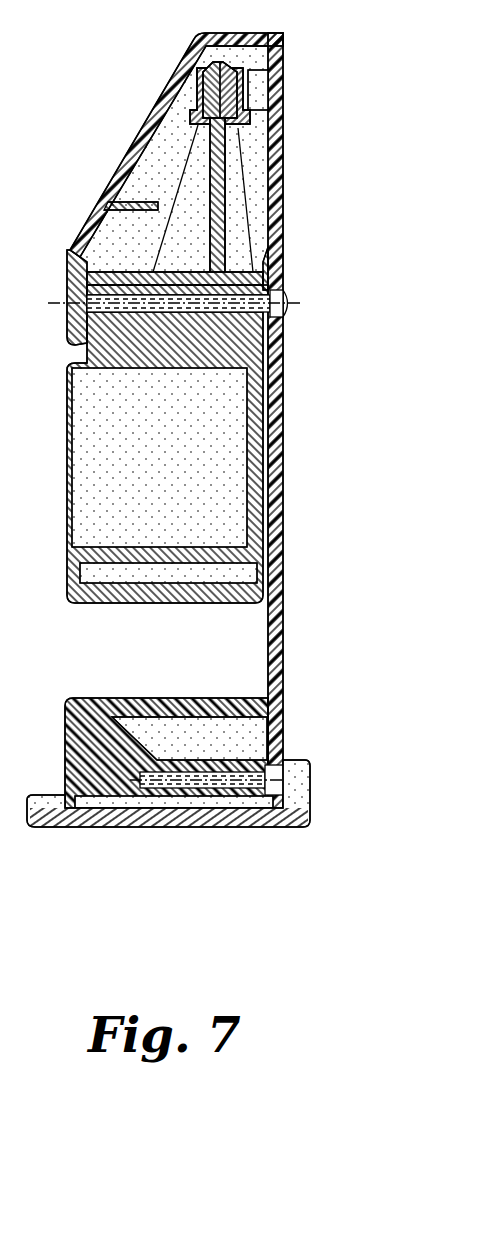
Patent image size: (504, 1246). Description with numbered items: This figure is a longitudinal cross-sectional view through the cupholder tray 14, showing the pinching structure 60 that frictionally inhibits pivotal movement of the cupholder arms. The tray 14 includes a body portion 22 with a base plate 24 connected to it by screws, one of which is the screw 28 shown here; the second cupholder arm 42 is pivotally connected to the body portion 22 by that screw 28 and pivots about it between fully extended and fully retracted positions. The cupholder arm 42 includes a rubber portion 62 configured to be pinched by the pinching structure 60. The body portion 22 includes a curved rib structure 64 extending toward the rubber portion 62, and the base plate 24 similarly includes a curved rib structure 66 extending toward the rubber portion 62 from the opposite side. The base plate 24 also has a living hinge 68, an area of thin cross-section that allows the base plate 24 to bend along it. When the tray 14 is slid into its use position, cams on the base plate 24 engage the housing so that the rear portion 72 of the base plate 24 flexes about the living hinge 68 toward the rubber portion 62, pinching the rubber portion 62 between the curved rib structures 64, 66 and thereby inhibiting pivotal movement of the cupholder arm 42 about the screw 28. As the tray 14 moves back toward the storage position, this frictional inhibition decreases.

The tray 14 is at (249, 873).
The body portion 22 is at (90, 212).
The base plate 24 is at (283, 387).
The screw 28 is at (290, 312).
The second cupholder arm 42 is at (228, 182).
The pinching structure 60 is at (262, 93).
The rubber portion 62 is at (216, 67).
The curved rib structure 64 is at (195, 103).
The curved rib structure 66 is at (244, 103).
The living hinge 68 is at (270, 252).
The rear portion 72 is at (283, 213).